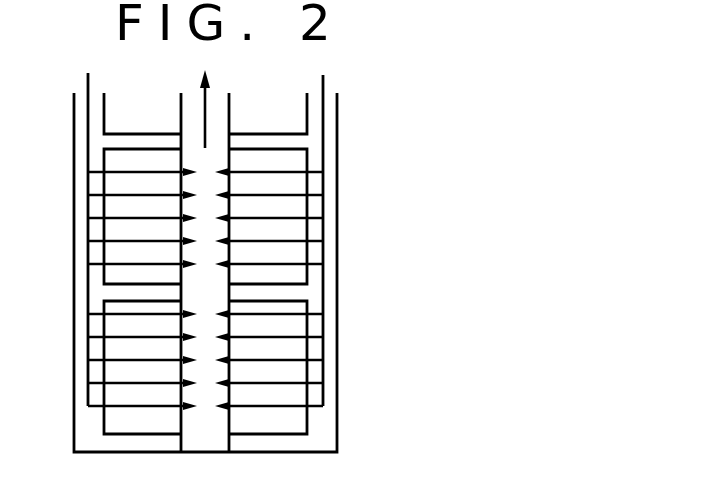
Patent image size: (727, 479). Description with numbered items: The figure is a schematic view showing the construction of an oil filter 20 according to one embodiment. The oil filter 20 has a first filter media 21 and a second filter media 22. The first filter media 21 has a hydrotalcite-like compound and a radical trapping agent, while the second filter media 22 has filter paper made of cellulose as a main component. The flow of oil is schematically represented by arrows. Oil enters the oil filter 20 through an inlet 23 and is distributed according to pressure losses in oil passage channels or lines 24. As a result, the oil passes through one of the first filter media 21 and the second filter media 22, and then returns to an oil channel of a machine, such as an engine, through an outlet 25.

The oil filter 20 is at (337, 337).
The first filter media 21 is at (307, 157).
The second filter media 22 is at (307, 424).
The inlet 23 is at (337, 107).
The oil passage channels 24 is at (323, 287).
The outlet 25 is at (217, 100).